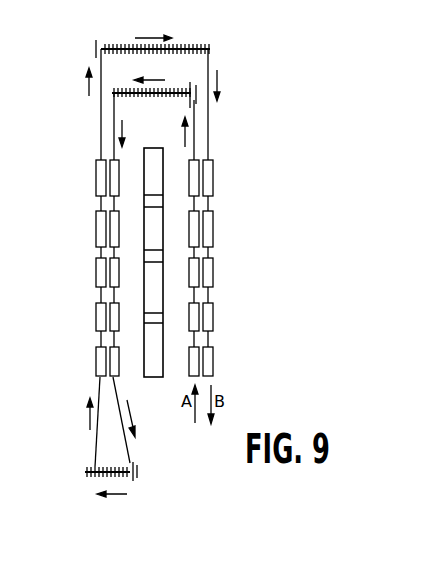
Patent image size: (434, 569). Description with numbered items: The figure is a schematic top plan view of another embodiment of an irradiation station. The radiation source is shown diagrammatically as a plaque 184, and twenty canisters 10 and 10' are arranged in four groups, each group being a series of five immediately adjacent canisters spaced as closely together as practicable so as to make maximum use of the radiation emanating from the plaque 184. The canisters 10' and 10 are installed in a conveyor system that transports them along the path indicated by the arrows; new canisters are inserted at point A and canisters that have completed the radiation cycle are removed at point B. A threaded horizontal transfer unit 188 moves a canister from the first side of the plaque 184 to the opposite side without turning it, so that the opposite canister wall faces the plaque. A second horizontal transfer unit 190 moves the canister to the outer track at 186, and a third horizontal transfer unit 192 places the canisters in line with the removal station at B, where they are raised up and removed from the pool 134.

The third horizontal transfer unit 192 is at (188, 47).
The threaded horizontal transfer unit 188 is at (117, 92).
The second horizontal transfer unit 190 is at (100, 481).
The outer track 186 is at (96, 447).
The radiation plaque 184 is at (150, 377).
The pool 134 is at (173, 456).
The canister 10 is at (157, 268).
The canister 10' is at (154, 268).